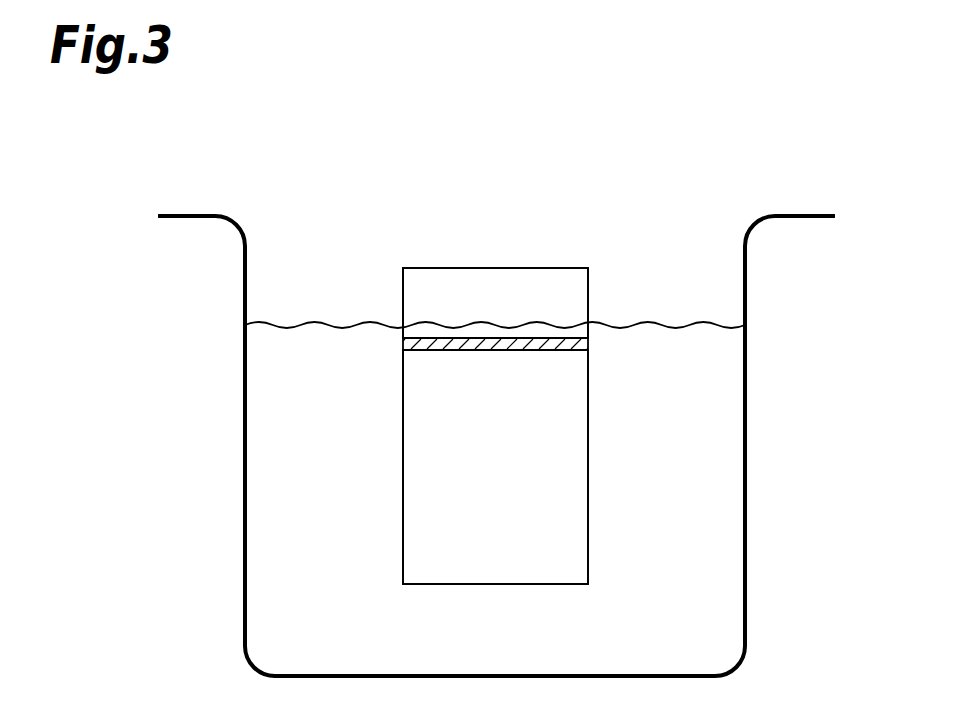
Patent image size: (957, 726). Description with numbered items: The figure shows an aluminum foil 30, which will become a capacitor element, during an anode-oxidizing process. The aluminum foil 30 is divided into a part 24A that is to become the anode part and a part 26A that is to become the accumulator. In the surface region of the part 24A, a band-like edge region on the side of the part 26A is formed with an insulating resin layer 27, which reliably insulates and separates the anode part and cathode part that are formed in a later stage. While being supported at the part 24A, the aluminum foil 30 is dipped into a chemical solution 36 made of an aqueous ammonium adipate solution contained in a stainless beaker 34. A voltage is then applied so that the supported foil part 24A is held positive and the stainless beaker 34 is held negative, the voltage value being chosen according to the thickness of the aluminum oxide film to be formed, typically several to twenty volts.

The part to become the anode part 24A is at (478, 278).
The part to become the accumulator 26A is at (573, 497).
The insulating resin layer 27 is at (579, 343).
The aluminum foil 30 is at (564, 258).
The stainless beaker 34 is at (746, 513).
The chemical solution 36 is at (304, 323).